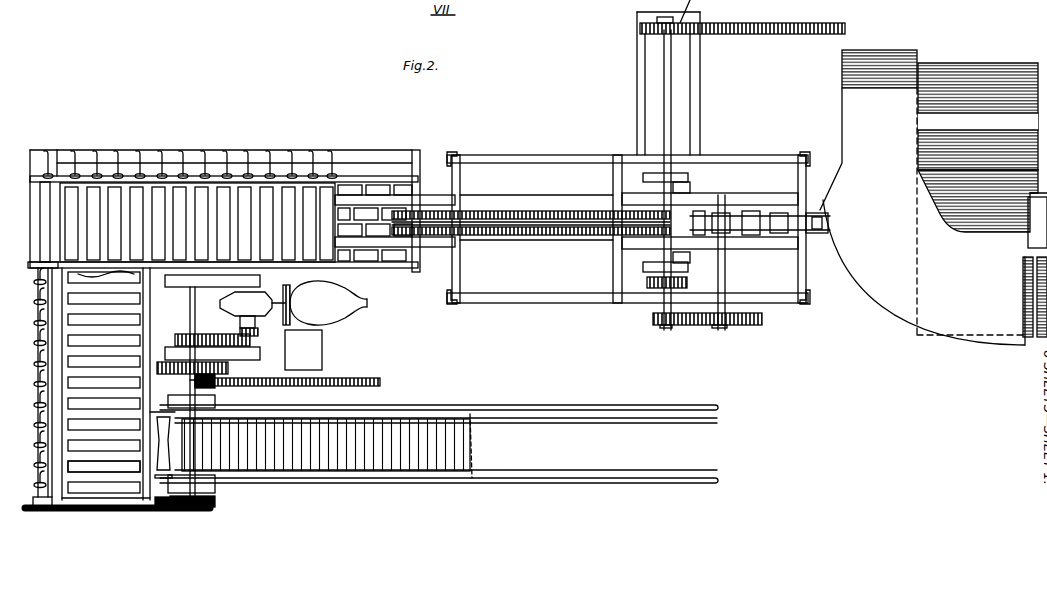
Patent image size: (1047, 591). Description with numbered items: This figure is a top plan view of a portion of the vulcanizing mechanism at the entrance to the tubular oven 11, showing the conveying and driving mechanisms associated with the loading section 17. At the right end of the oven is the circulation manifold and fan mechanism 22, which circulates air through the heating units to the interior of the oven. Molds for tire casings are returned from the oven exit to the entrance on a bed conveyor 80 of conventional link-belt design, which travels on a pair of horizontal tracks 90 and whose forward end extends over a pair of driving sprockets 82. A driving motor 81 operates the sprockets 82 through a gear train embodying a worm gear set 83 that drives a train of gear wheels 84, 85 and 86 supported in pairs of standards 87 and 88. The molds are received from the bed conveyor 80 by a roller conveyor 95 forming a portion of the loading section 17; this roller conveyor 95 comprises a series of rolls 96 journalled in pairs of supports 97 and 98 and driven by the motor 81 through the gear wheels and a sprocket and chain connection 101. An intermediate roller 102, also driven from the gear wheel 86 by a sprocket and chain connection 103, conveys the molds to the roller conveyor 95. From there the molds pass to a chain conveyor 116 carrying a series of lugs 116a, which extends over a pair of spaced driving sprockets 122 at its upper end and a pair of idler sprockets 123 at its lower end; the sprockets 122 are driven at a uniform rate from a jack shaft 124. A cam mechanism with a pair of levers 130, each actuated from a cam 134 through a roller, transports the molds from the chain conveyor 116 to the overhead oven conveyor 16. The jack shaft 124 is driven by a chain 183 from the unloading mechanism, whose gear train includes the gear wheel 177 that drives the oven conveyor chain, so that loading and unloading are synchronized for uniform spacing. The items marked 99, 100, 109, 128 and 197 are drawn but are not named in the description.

The tubular oven 11 is at (1038, 208).
The overhead oven conveyor 16 is at (830, 228).
The loading section 17 is at (628, 214).
The circulation manifold and fan mechanism 22 is at (933, 197).
The bed conveyor 80 is at (470, 442).
The driving motor 81 is at (349, 297).
The driving sprockets 82 is at (210, 412).
The worm gear set 83 is at (230, 296).
The gear wheel 84 is at (212, 336).
The gear wheel 85 is at (228, 370).
The gear wheel 86 is at (178, 374).
The standards 87 is at (176, 287).
The standards 88 is at (215, 400).
The horizontal tracks 90 is at (580, 418).
The roller conveyor 95 is at (18, 222).
The rolls 96 is at (102, 320).
The supports 97 is at (48, 309).
The supports 98 is at (370, 182).
The chain guide 99 is at (40, 353).
The magazine 100 is at (372, 163).
The sprocket and chain connection 101 is at (108, 499).
The intermediate roller 102 is at (160, 466).
The sprocket and chain connection 103 is at (150, 503).
The blocks 109 is at (368, 245).
The chain conveyor 116 is at (583, 209).
The lugs 116a is at (553, 209).
The driving sprockets 122 is at (710, 221).
The idler sprockets 123 is at (395, 221).
The jack shaft 124 is at (673, 75).
The gear 128 is at (657, 288).
The levers 130 is at (690, 188).
The cam 134 is at (660, 173).
The gear wheel 177 is at (762, 320).
The chain 183 is at (778, 23).
The rack bar 197 is at (360, 378).